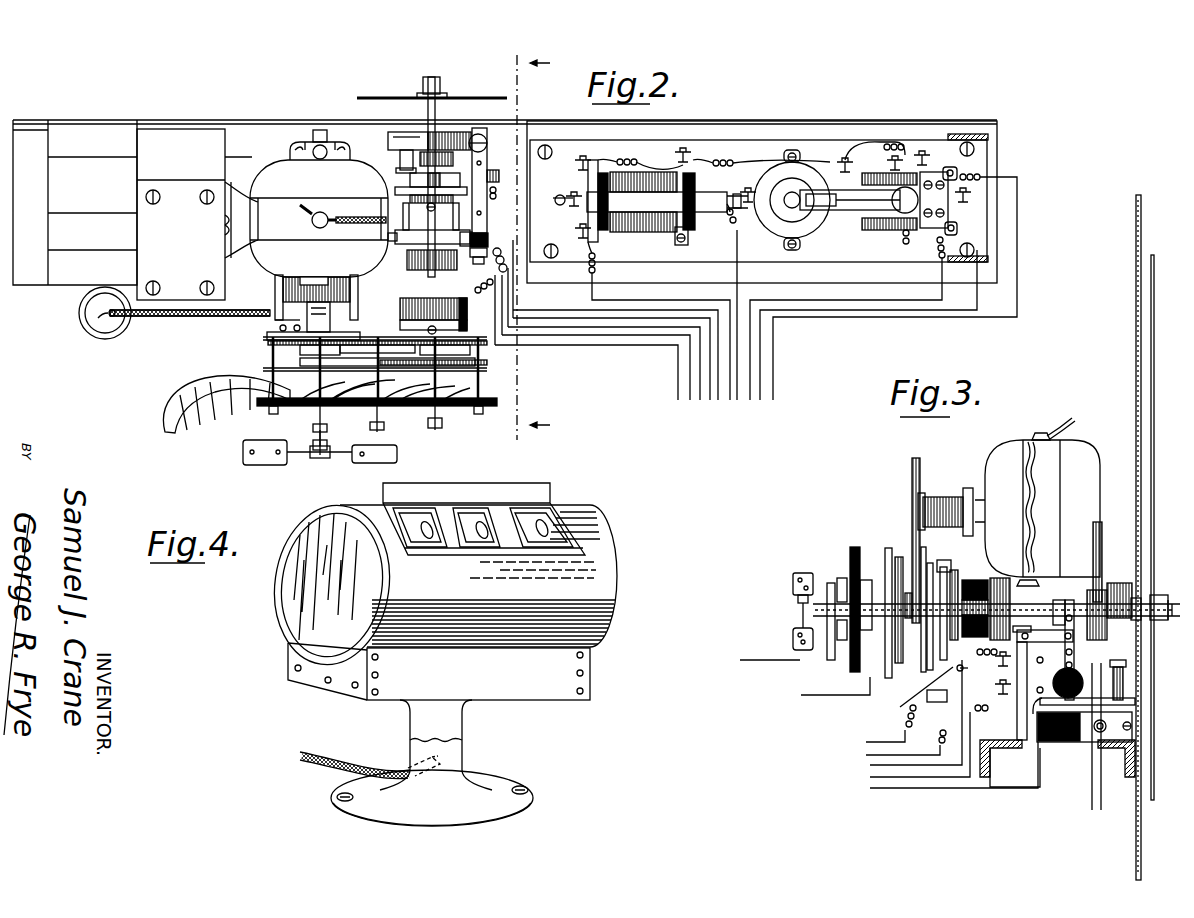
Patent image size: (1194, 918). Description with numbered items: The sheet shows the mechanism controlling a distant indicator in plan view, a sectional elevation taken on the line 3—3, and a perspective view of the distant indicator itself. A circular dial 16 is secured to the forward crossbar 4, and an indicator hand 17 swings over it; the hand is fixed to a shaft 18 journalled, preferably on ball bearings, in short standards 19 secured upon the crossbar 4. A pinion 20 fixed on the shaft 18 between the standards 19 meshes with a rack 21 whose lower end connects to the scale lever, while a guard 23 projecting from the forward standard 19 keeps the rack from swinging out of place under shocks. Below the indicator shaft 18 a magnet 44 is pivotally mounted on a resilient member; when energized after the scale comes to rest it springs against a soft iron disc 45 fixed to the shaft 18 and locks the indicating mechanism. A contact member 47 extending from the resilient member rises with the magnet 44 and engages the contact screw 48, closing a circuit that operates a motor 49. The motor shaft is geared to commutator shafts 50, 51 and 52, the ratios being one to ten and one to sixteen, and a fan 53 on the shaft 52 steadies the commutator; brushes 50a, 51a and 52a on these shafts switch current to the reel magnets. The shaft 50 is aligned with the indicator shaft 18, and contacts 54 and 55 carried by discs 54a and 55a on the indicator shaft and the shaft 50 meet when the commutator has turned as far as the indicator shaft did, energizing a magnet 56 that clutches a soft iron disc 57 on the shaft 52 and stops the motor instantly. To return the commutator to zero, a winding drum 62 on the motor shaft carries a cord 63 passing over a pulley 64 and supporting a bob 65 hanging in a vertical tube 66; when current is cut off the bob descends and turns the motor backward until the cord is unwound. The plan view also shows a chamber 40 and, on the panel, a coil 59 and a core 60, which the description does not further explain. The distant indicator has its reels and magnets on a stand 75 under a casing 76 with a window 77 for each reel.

In FIG. 2, the section line 3— 3 is at (531, 247).
In FIG. 2, the crossbar 4 is at (907, 128).
In FIG. 3, the crossbar 4 is at (988, 788).
In FIG. 2, the circular dial 16 is at (505, 111).
In FIG. 3, the circular dial 16 is at (1141, 206).
In FIG. 2, the indicator hand 17 is at (358, 97).
In FIG. 3, the indicator hand 17 is at (1154, 305).
In FIG. 2, the shaft 18 is at (442, 95).
In FIG. 3, the shaft 18 is at (1165, 600).
In FIG. 2, the standards 19 is at (445, 135).
In FIG. 3, the standards 19 is at (1005, 578).
In FIG. 2, the pinion 20 is at (450, 160).
In FIG. 3, the pinion 20 is at (1148, 600).
In FIG. 2, the rack 21 is at (408, 132).
In FIG. 3, the rack 21 is at (1103, 535).
In FIG. 2, the guard 23 is at (400, 150).
In FIG. 3, the float tank 40 is at (1078, 462).
In FIG. 2, the magnet 44 is at (487, 158).
In FIG. 3, the magnet 44 is at (1062, 740).
In FIG. 2, the soft iron disc 45 is at (527, 145).
In FIG. 3, the soft iron disc 45 is at (1035, 635).
In FIG. 3, the contact member 47 is at (1125, 701).
In FIG. 3, the contact screw 48 is at (1123, 678).
In FIG. 2, the motor 49 is at (280, 178).
In FIG. 2, the commutator shaft 50 is at (440, 378).
In FIG. 3, the commutator shaft 50 is at (886, 600).
In FIG. 2, the brush 50a is at (437, 412).
In FIG. 2, the commutator shaft 51 is at (383, 378).
In FIG. 2, the brush 51a is at (382, 412).
In FIG. 2, the commutator shaft 52 is at (323, 378).
In FIG. 3, the commutator shaft 52 is at (815, 575).
In FIG. 2, the brush 52a is at (326, 412).
In FIG. 2, the fan 53 is at (266, 462).
In FIG. 3, the fan 53 is at (793, 650).
In FIG. 3, the contact 54 is at (935, 590).
In FIG. 3, the disc 54a is at (958, 656).
In FIG. 3, the contact 55 is at (963, 585).
In FIG. 3, the disc 55a is at (908, 693).
In FIG. 2, the magnet 56 is at (358, 292).
In FIG. 3, the magnet 56 is at (992, 580).
In FIG. 2, the soft iron disc 57 is at (340, 318).
In FIG. 2, the solenoid coil 59 is at (655, 228).
In FIG. 2, the solenoid core 60 is at (712, 206).
In FIG. 2, the winding drum 62 is at (283, 322).
In FIG. 3, the winding drum 62 is at (945, 500).
In FIG. 2, the cord 63 is at (208, 317).
In FIG. 2, the pulley 64 is at (118, 320).
In FIG. 2, the bob 65 is at (103, 326).
In FIG. 2, the vertical tube 66 is at (80, 322).
In FIG. 4, the stand 75 is at (460, 756).
In FIG. 4, the casing 76 is at (600, 577).
In FIG. 4, the window 77 is at (412, 523).